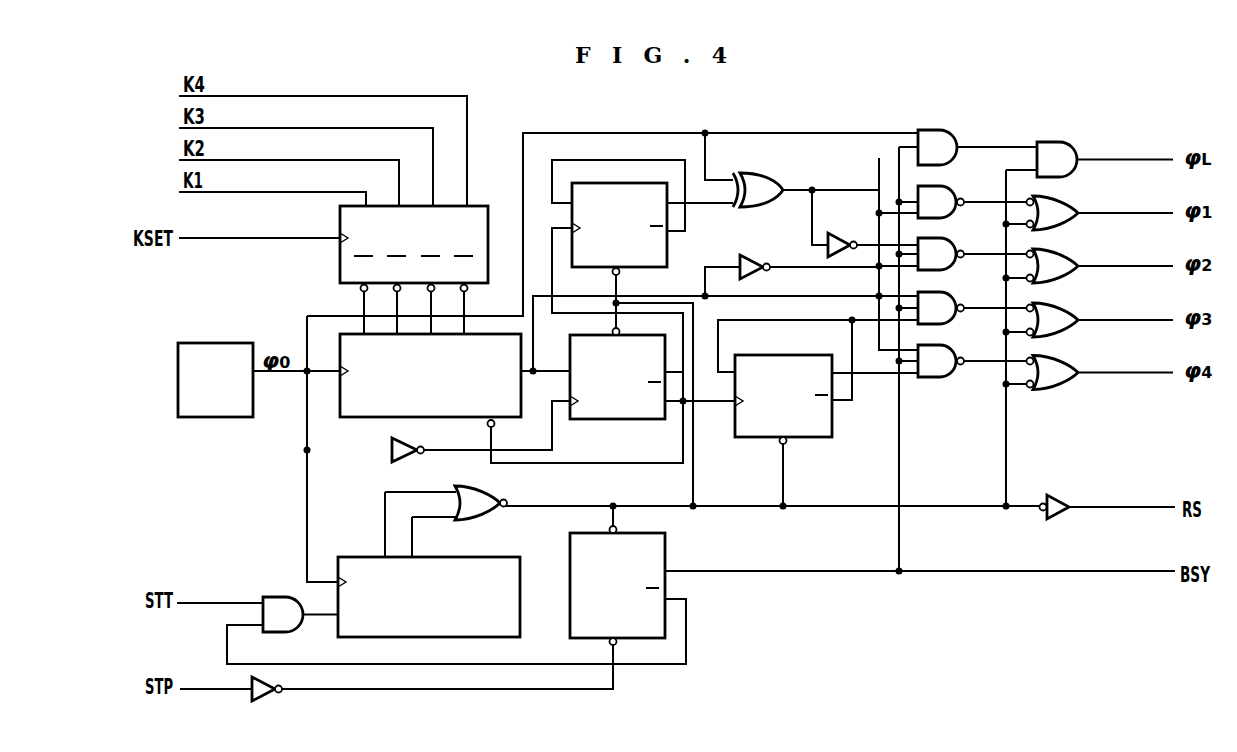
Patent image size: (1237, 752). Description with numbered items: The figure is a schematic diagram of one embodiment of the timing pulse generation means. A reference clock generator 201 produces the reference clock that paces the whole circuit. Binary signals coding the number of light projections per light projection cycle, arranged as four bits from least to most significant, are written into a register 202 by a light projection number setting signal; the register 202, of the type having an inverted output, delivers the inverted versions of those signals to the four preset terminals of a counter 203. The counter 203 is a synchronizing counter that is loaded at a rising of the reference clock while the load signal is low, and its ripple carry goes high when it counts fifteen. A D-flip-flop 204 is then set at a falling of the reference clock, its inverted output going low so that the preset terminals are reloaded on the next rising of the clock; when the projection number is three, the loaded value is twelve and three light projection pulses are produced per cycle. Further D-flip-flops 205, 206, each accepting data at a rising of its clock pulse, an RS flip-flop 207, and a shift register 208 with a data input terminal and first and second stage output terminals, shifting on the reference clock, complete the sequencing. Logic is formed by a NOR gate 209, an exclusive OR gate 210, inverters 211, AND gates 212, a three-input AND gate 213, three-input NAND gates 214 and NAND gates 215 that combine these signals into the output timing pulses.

The reference clock generator 201 is at (215, 343).
The register 202 is at (489, 206).
The counter 203 is at (340, 390).
The D-flip-flop 204 is at (618, 420).
The D-flip-flop 205 is at (805, 440).
The D-flip-flop 206 is at (669, 255).
The RS flip-flop 207 is at (667, 556).
The shift register 208 is at (483, 557).
The NOR gate 209 is at (490, 486).
The exclusive OR gate 210 is at (778, 175).
The inverter 211 is at (315, 675).
The AND gate 212 is at (268, 560).
The 3-inputs AND gate 213 is at (938, 129).
The 3-inputs NAND gate 214 is at (940, 413).
The NAND gate 215 is at (1100, 345).